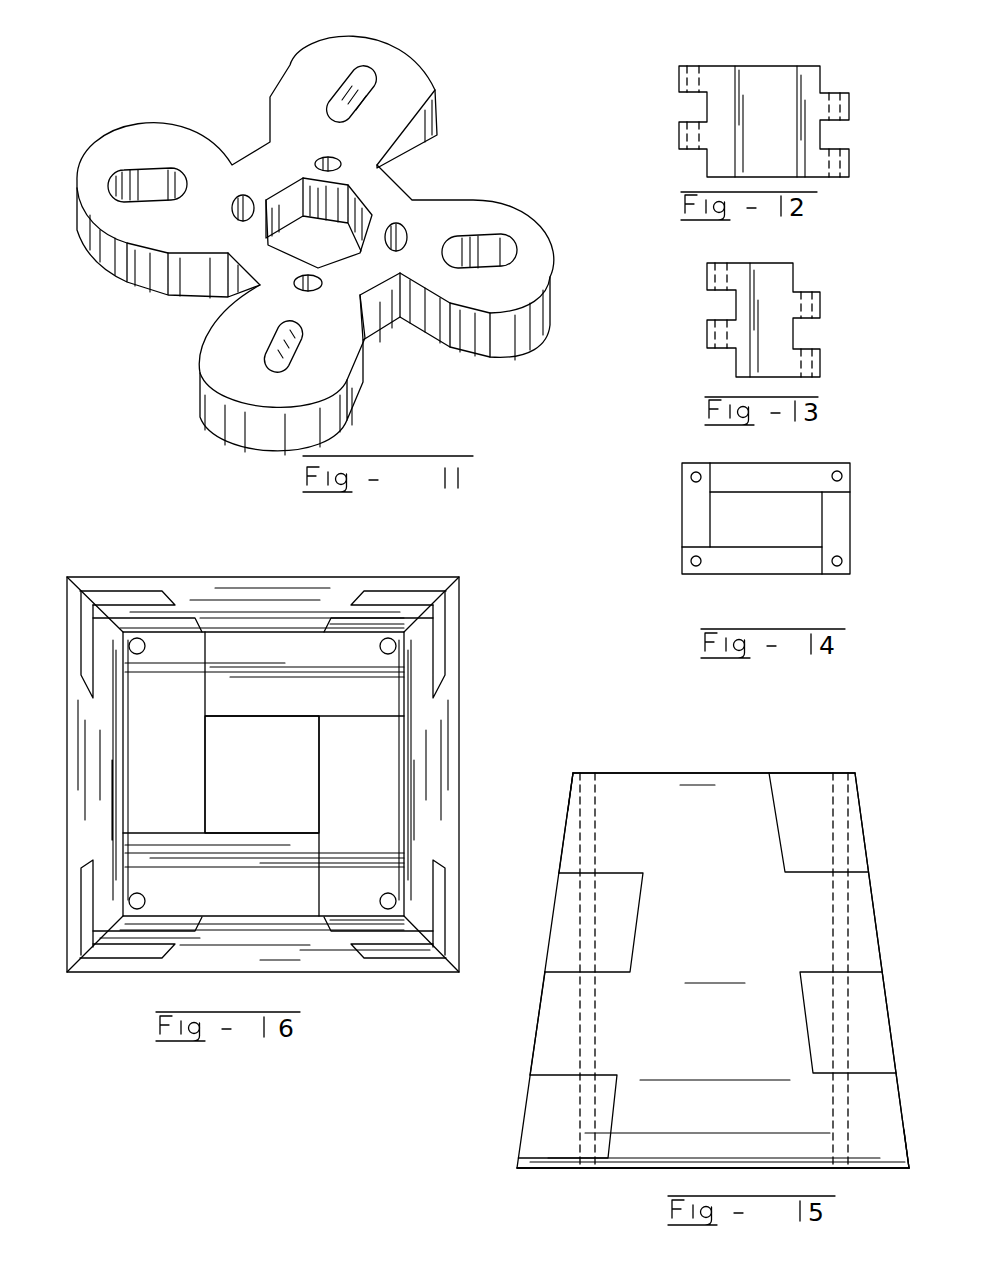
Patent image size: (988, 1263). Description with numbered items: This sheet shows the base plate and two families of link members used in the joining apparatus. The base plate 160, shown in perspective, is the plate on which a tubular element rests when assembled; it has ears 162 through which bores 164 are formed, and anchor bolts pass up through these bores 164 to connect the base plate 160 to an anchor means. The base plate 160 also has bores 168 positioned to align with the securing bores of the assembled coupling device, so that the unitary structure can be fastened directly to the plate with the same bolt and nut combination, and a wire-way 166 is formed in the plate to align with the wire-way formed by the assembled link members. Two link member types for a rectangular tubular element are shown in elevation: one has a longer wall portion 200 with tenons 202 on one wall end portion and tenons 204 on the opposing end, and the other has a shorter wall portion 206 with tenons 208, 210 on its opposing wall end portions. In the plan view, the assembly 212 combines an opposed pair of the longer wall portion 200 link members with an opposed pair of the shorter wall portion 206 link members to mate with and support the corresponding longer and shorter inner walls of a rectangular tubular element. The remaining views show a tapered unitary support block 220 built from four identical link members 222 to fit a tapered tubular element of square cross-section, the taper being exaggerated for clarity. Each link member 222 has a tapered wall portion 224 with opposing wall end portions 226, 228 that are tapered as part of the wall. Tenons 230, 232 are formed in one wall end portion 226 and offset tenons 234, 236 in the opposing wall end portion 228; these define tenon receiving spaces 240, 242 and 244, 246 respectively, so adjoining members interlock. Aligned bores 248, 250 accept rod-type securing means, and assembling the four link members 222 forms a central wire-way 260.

In FIG. 11, the base plate 160 is at (246, 114).
In FIG. 11, the ears 162 is at (423, 65).
In FIG. 11, the bores 164 is at (370, 82).
In FIG. 11, the wire-way 166 is at (362, 202).
In FIG. 11, the bores 168 is at (243, 196).
In FIG. 12, the longer wall portion 200 is at (745, 66).
In FIG. 14, the longer wall portion 200 is at (770, 462).
In FIG. 12, the tenons 202 is at (679, 127).
In FIG. 12, the tenons 204 is at (849, 153).
In FIG. 13, the wall portion 206 is at (760, 263).
In FIG. 14, the wall portion 206 is at (682, 527).
In FIG. 13, the tenons 208 is at (707, 330).
In FIG. 13, the tenons 210 is at (820, 363).
In FIG. 14, the assembly 212 is at (720, 456).
In FIG. 15, the tapered unitary support block 220 is at (495, 1163).
In FIG. 16, the link members 222 is at (263, 577).
In FIG. 15, the link members 222 is at (657, 1168).
In FIG. 15, the tapered wall portion 224 is at (695, 773).
In FIG. 15, the wall end portion 226 is at (573, 773).
In FIG. 15, the wall end portion 228 is at (855, 1170).
In FIG. 15, the tenon 230 is at (563, 835).
In FIG. 15, the tenon 232 is at (541, 1025).
In FIG. 15, the offset tenon 234 is at (877, 920).
In FIG. 15, the offset tenon 236 is at (903, 1128).
In FIG. 15, the tenon receiving space 240 is at (562, 872).
In FIG. 15, the tenon receiving space 242 is at (552, 1077).
In FIG. 15, the tenon receiving space 244 is at (855, 872).
In FIG. 15, the tenon receiving space 246 is at (863, 1073).
In FIG. 16, the aligned bore 248 is at (145, 901).
In FIG. 15, the aligned bore 248 is at (588, 793).
In FIG. 16, the aligned bore 250 is at (392, 898).
In FIG. 15, the aligned bore 250 is at (847, 793).
In FIG. 16, the wire-way 260 is at (278, 801).